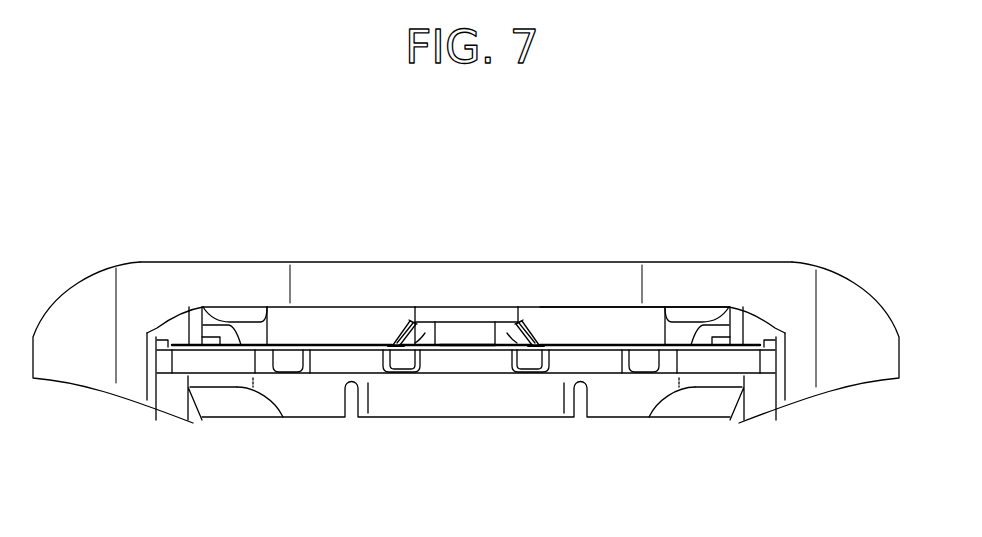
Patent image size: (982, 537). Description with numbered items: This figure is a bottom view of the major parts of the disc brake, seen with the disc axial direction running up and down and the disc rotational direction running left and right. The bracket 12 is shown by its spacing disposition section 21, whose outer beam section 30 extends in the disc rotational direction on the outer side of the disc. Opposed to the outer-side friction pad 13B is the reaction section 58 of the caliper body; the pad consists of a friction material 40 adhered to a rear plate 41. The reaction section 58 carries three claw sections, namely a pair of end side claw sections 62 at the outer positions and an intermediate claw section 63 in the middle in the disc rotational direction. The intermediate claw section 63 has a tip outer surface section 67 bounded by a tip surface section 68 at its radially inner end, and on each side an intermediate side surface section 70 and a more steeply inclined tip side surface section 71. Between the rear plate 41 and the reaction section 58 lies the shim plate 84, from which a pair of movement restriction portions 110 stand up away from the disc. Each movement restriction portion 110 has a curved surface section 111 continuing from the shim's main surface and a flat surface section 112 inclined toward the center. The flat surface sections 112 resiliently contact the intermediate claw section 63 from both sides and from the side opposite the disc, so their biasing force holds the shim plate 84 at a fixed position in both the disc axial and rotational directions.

The spacing disposition section 21 is at (813, 255).
The bracket 12 is at (466, 287).
The outer beam section 30 is at (683, 280).
The reaction section 58 is at (645, 300).
The shim plate 84 is at (182, 338).
The end side claw section 62 is at (242, 300).
The intermediate claw section 63 is at (470, 300).
The tip outer surface section 67 is at (453, 318).
The tip surface section 68 is at (467, 330).
The movement restriction portion 110 is at (394, 322).
The curved surface section 111 is at (393, 343).
The flat surface section 112 is at (412, 320).
The rear plate 41 is at (187, 368).
The intermediate side surface section 70 is at (405, 346).
The tip side surface section 71 is at (412, 352).
The friction material 40 is at (307, 398).
The friction pad 13B is at (229, 422).